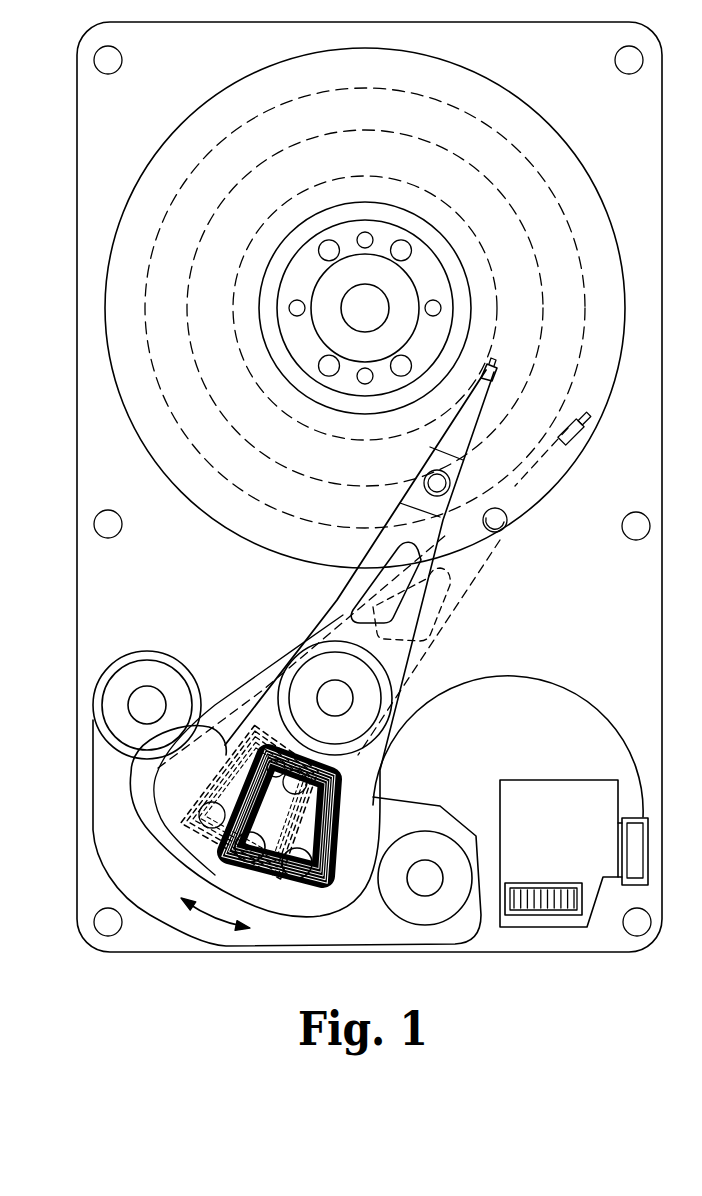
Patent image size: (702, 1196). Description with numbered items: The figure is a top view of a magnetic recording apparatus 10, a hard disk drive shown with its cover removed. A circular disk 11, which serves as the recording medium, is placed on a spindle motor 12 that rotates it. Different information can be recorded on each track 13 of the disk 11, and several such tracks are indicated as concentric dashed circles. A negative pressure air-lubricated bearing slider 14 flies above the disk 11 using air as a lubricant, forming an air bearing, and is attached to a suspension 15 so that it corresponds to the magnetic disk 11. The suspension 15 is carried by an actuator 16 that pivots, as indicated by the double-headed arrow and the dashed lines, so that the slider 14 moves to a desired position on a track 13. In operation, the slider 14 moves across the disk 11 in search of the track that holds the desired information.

The apparatus 10 is at (93, 412).
The disk 11 is at (128, 200).
The spindle motor 12 is at (314, 333).
The track 13 is at (188, 273).
The slider 14 is at (495, 369).
The suspension 15 is at (470, 428).
The actuator 16 is at (340, 611).